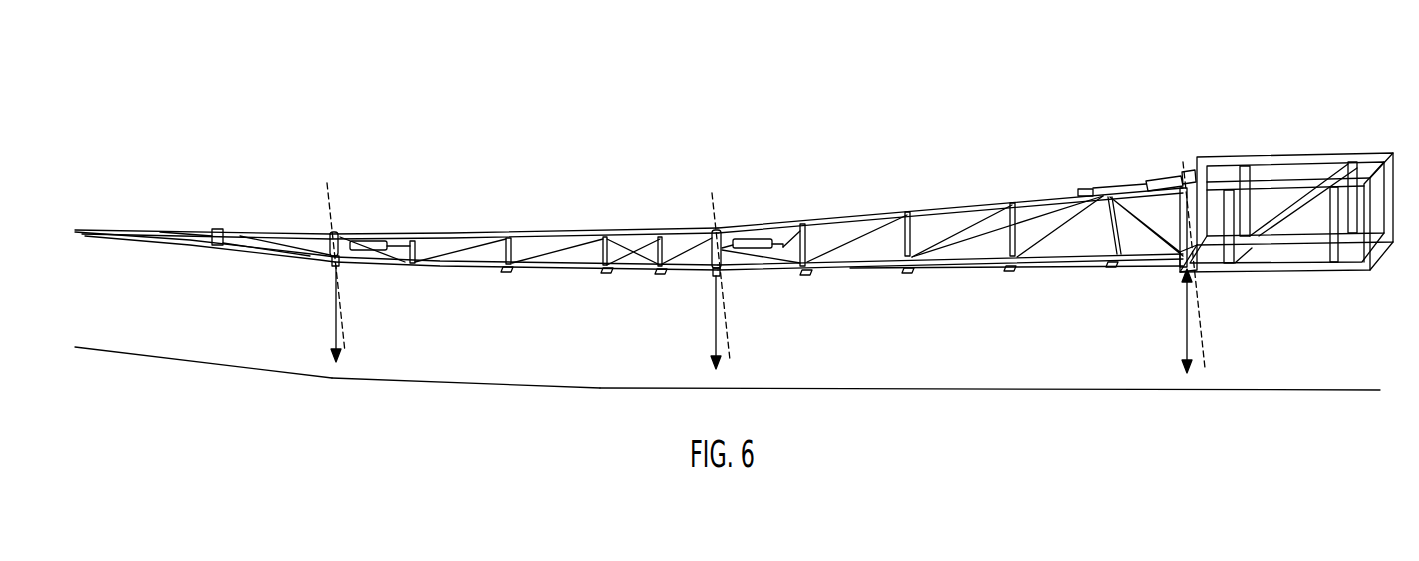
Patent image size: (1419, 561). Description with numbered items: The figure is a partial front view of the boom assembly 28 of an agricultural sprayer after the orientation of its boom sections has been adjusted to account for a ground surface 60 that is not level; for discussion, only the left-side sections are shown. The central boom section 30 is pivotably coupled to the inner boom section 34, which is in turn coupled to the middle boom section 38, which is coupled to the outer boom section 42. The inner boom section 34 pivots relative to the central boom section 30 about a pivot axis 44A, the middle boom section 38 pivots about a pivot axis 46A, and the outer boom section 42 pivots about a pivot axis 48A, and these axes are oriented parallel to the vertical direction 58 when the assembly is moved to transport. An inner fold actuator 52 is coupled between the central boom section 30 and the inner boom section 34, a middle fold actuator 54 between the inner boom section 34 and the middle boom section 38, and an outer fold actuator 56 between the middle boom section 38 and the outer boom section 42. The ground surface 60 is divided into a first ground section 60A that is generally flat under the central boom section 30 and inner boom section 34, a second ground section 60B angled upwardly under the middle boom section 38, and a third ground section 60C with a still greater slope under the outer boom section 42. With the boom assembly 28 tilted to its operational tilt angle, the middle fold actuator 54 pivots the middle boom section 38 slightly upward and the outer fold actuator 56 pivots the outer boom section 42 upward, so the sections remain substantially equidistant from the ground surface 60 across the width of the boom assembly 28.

The boom assembly 28 is at (344, 154).
The central boom section 30 is at (1292, 154).
The inner boom section 34 is at (927, 211).
The middle boom section 38 is at (545, 234).
The outer boom section 42 is at (273, 235).
The pivot axis 44A is at (1238, 317).
The pivot axis 46A is at (728, 312).
The pivot axis 48A is at (380, 297).
The inner fold actuator 52 is at (1162, 175).
The middle fold actuator 54 is at (745, 237).
The outer fold actuator 56 is at (366, 243).
The vertical direction 58 is at (333, 332).
The ground surface 60 is at (1306, 400).
The first ground section 60A is at (1042, 391).
The second ground section 60B is at (533, 386).
The third ground section 60C is at (177, 360).